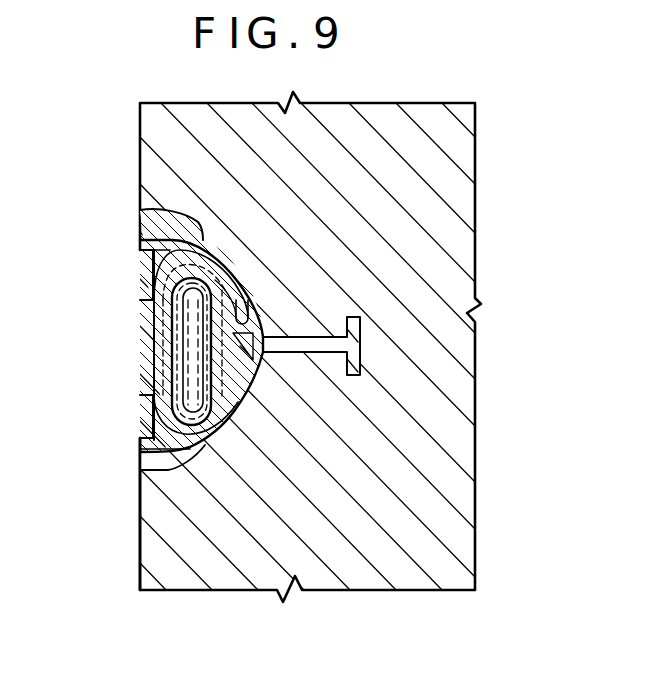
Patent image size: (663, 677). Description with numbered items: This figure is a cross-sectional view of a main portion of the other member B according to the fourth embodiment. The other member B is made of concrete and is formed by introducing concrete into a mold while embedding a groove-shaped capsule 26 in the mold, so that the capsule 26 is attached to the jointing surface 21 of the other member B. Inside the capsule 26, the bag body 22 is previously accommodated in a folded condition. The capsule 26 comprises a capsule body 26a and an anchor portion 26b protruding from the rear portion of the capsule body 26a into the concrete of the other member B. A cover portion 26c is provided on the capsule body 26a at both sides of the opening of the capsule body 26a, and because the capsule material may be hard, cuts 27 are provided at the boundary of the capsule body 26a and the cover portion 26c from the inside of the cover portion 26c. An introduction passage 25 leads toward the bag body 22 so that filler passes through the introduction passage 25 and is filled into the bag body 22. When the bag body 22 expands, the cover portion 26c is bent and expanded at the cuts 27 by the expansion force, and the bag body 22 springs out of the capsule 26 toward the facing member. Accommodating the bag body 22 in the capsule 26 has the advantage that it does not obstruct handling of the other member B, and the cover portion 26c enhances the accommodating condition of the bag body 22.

The other member B is at (470, 506).
The jointing surface 21 is at (140, 562).
The bag body 22 is at (154, 356).
The introduction passage 25 is at (265, 330).
The capsule 26 is at (140, 212).
The capsule body 26a is at (140, 472).
The anchor portion 26b is at (316, 330).
The cover portion 26c is at (140, 293).
The cuts 27 is at (140, 253).